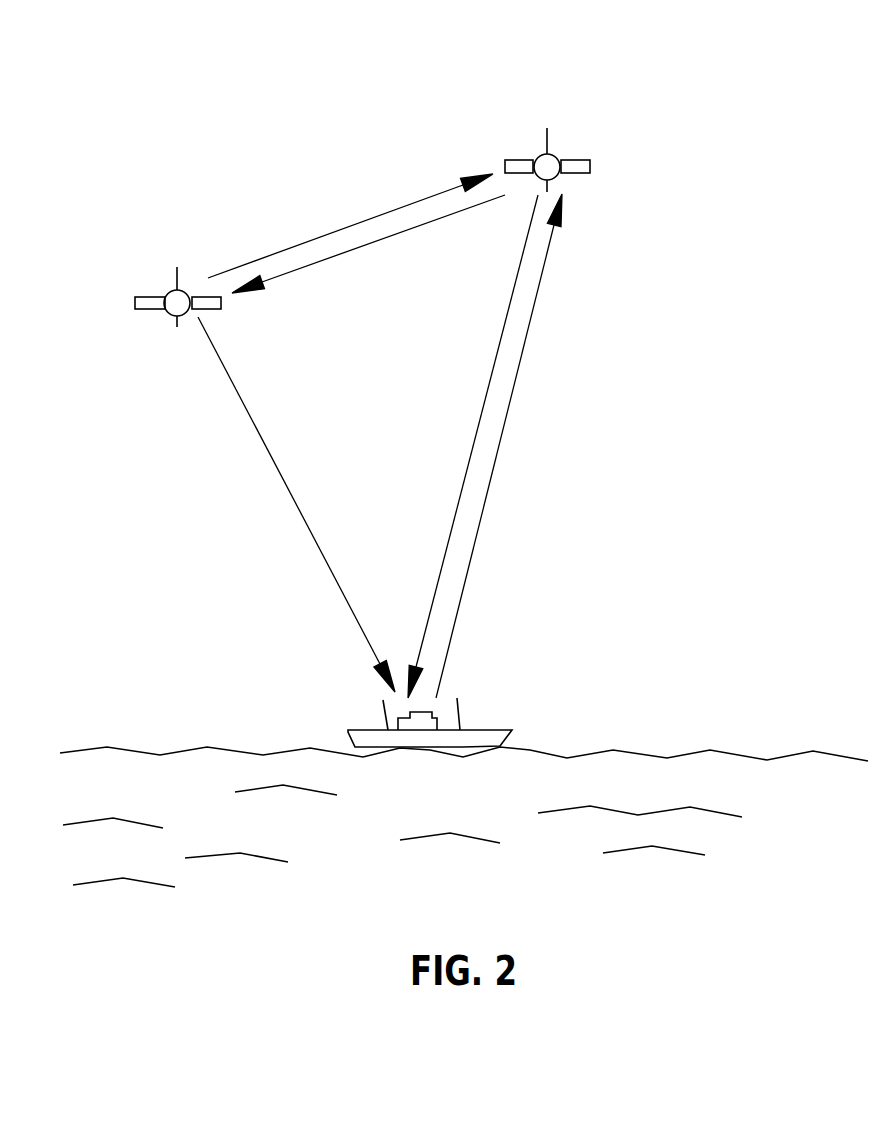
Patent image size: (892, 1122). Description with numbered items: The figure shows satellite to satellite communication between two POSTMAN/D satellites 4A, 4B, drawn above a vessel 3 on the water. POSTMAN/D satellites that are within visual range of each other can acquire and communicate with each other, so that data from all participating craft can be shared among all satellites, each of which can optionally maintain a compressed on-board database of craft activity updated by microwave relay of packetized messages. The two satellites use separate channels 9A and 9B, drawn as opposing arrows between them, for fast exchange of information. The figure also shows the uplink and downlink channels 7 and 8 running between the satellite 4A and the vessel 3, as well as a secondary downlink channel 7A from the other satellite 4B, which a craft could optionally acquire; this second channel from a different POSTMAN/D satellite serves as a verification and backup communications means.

The POSTMAN/D satellite 4A is at (530, 148).
The POSTMAN/D satellite 4B is at (155, 288).
The satellite-to-satellite channel 9A is at (317, 230).
The satellite-to-satellite channel 9B is at (367, 238).
The downlink channel 7 is at (477, 405).
The secondary downlink channel 7A is at (265, 462).
The uplink channel 8 is at (478, 510).
The vessel 3 is at (480, 718).